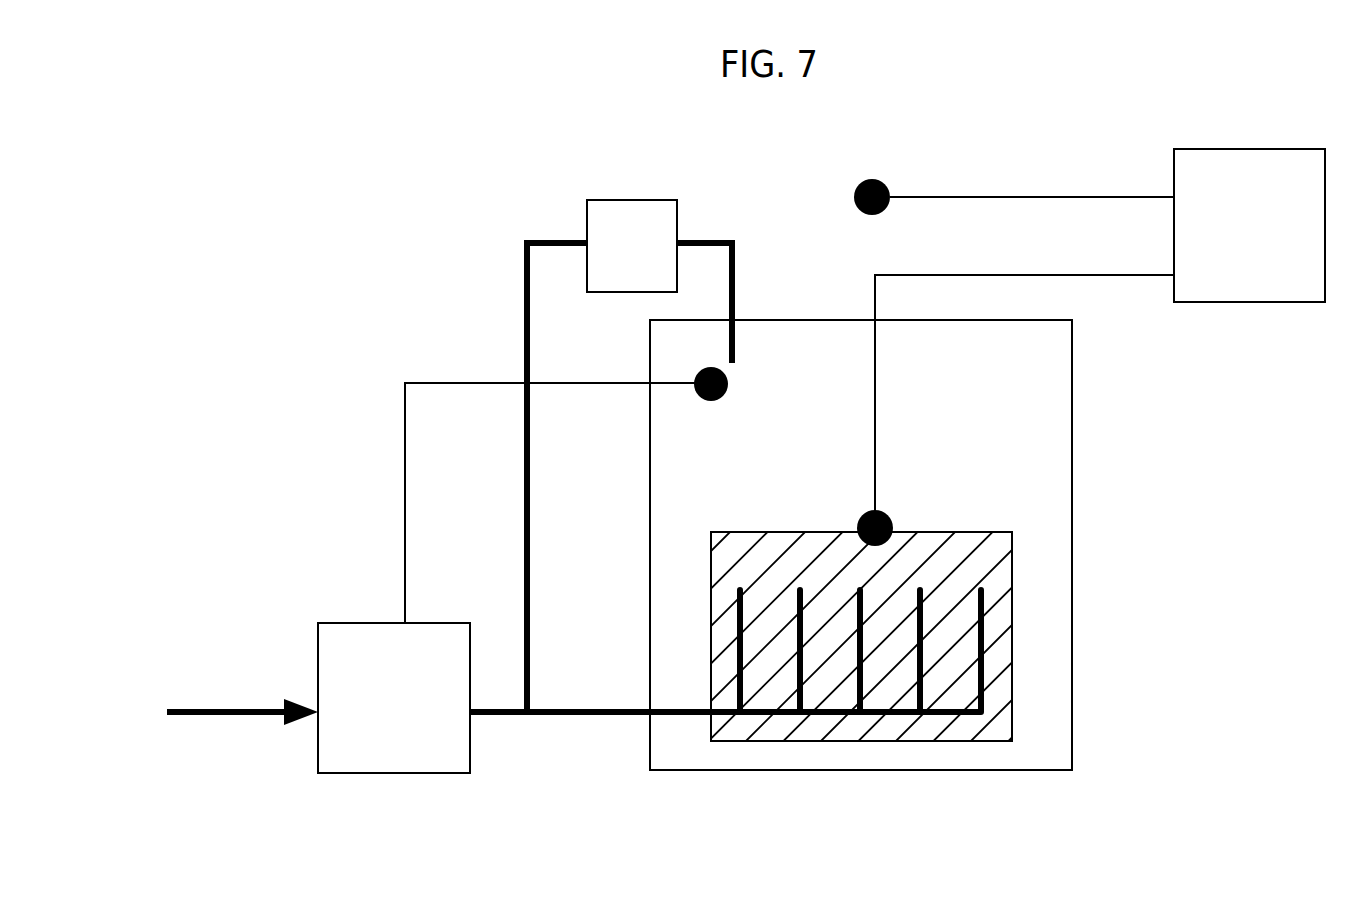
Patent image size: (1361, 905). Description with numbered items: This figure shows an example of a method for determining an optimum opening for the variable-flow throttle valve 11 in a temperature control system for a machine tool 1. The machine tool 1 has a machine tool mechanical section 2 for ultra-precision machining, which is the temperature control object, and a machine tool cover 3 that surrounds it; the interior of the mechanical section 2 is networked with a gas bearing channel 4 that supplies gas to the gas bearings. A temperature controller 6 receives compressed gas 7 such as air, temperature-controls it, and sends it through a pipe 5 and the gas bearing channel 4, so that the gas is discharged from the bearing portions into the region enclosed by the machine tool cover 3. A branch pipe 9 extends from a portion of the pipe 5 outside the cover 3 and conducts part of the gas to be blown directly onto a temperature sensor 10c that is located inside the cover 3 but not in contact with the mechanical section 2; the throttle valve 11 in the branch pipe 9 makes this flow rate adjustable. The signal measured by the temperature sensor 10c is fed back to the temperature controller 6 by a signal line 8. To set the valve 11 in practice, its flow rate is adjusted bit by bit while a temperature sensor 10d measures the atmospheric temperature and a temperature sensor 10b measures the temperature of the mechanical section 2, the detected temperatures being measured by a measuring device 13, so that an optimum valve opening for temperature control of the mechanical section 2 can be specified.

The machine tool 1 is at (773, 305).
The machine tool mechanical section 2 is at (990, 528).
The machine tool cover 3 is at (1072, 603).
The gas bearing channel 4 is at (988, 677).
The pipe 5 is at (590, 716).
The temperature controller 6 is at (348, 718).
The gas 7 is at (194, 704).
The signal line 8 is at (405, 485).
The branch pipe 9 is at (512, 343).
The temperature sensor 10b is at (885, 512).
The temperature sensor 10c is at (692, 375).
The temperature sensor 10d is at (885, 178).
The variable-flow throttle valve 11 is at (587, 208).
The measuring device 13 is at (1160, 165).